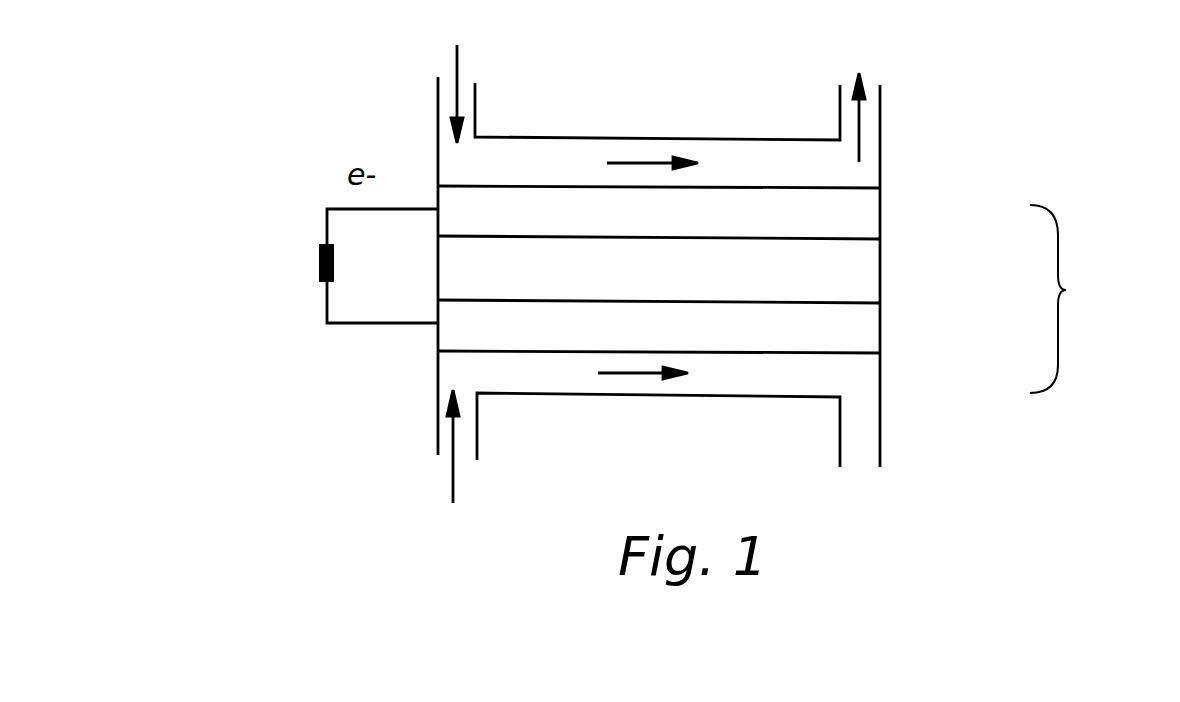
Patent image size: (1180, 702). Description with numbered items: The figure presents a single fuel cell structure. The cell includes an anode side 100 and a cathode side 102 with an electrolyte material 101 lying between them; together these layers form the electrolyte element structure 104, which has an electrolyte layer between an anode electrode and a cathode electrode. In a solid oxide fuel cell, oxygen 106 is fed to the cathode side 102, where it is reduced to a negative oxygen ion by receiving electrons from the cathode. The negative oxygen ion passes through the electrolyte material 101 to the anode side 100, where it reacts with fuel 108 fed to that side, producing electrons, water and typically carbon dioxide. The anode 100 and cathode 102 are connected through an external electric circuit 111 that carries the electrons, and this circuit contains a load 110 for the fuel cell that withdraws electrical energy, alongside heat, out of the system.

The anode side 100 is at (852, 212).
The electrolyte material 101 is at (853, 268).
The cathode side 102 is at (845, 325).
The electrolyte element structure 104 is at (1087, 299).
The oxygen 106 is at (452, 487).
The fuel 108 is at (457, 63).
The load 110 is at (318, 265).
The external electric circuit 111 is at (305, 196).